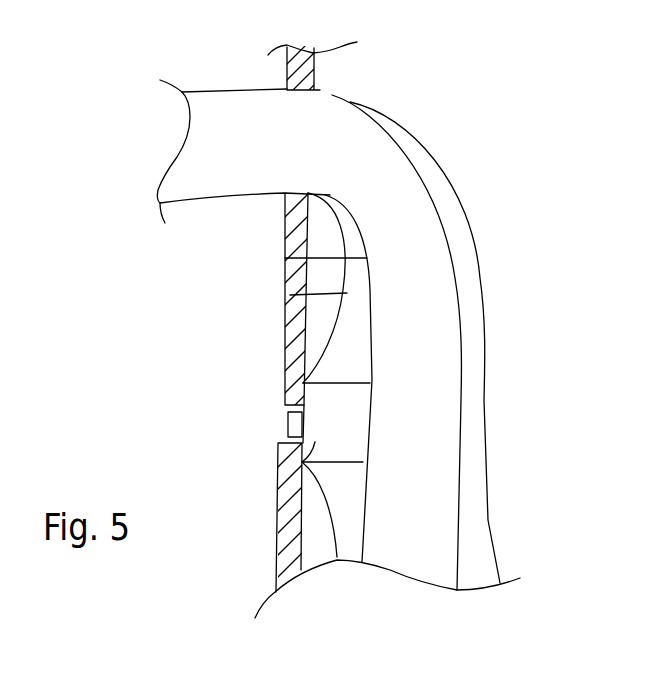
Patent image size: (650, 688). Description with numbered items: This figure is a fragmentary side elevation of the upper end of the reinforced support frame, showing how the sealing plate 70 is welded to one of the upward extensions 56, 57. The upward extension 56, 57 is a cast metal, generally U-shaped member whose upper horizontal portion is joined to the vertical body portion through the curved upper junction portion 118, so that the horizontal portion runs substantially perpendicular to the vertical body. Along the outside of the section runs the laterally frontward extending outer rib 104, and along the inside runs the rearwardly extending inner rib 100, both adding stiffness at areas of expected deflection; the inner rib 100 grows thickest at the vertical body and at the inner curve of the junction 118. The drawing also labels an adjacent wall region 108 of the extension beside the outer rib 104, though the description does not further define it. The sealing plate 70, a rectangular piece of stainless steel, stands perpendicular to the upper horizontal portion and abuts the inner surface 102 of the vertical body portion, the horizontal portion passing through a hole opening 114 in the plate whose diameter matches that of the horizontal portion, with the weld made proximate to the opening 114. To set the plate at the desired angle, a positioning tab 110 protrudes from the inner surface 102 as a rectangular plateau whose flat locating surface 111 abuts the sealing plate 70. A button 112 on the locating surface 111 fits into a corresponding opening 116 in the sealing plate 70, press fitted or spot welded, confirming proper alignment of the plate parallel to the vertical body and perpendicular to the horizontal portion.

The upward extension 56 is at (264, 286).
The upward extension 57 is at (228, 122).
The hole opening 114 is at (318, 90).
The upper junction portion 118 is at (375, 172).
The outer wall 108 is at (422, 339).
The outer rib 104 is at (470, 348).
The opening 116 is at (285, 413).
The inner surface 102 is at (285, 258).
The inner rib 100 is at (290, 295).
The button 112 is at (295, 422).
The flat locating surface 111 is at (300, 456).
The positioning tab 110 is at (302, 462).
The sealing plate 70 is at (285, 510).